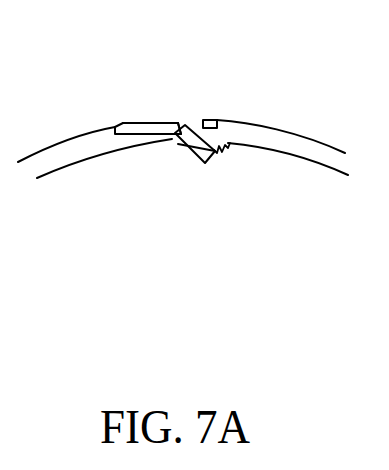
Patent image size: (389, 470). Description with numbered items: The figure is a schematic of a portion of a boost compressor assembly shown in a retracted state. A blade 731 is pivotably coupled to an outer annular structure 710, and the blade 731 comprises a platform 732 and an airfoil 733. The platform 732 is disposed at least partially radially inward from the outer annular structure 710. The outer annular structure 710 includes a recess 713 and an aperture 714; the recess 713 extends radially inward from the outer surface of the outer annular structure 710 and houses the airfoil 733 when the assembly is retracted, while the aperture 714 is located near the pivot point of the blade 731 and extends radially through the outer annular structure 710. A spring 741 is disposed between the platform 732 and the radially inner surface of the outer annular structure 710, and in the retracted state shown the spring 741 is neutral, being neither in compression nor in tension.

The outer annular structure 710 is at (69, 146).
The blade 731 is at (132, 127).
The airfoil 733 is at (158, 127).
The recess 713 is at (168, 127).
The aperture 714 is at (178, 144).
The platform 732 is at (177, 151).
The spring 741 is at (229, 143).